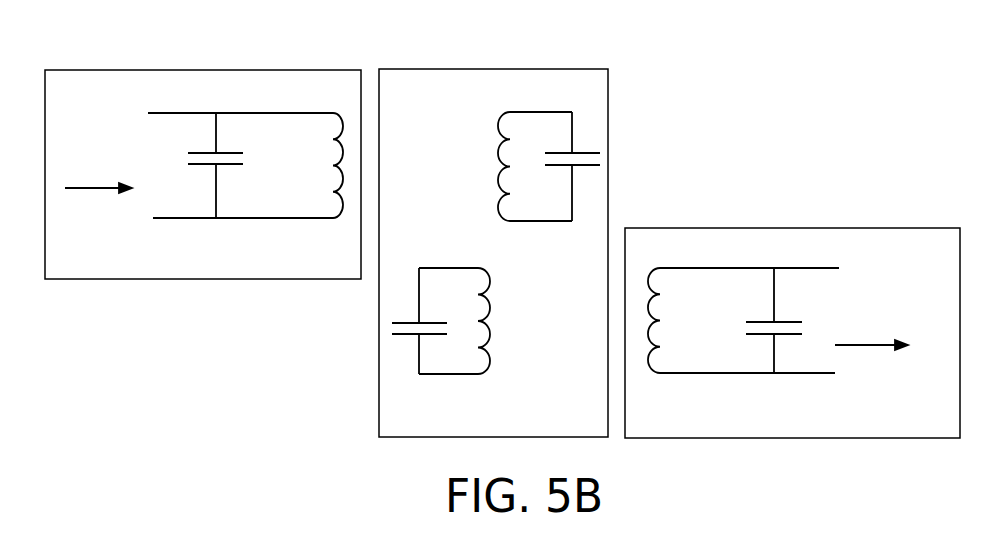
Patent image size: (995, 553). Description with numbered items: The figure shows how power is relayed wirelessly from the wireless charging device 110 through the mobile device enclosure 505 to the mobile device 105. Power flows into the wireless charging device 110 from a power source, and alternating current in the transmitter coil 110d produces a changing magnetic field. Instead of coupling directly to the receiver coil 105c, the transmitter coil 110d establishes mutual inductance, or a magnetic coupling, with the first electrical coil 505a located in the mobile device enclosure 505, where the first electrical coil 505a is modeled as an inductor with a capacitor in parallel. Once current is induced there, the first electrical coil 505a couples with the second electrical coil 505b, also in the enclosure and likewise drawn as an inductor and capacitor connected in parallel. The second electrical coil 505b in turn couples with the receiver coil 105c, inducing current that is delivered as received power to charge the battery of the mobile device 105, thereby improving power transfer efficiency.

The wireless charging device 110 is at (112, 69).
The transmitter coil 110d is at (308, 179).
The mobile device enclosure 505 is at (608, 104).
The first electrical coil 505a is at (567, 216).
The second electrical coil 505b is at (478, 365).
The mobile device 105 is at (827, 227).
The receiver coil 105c is at (733, 338).